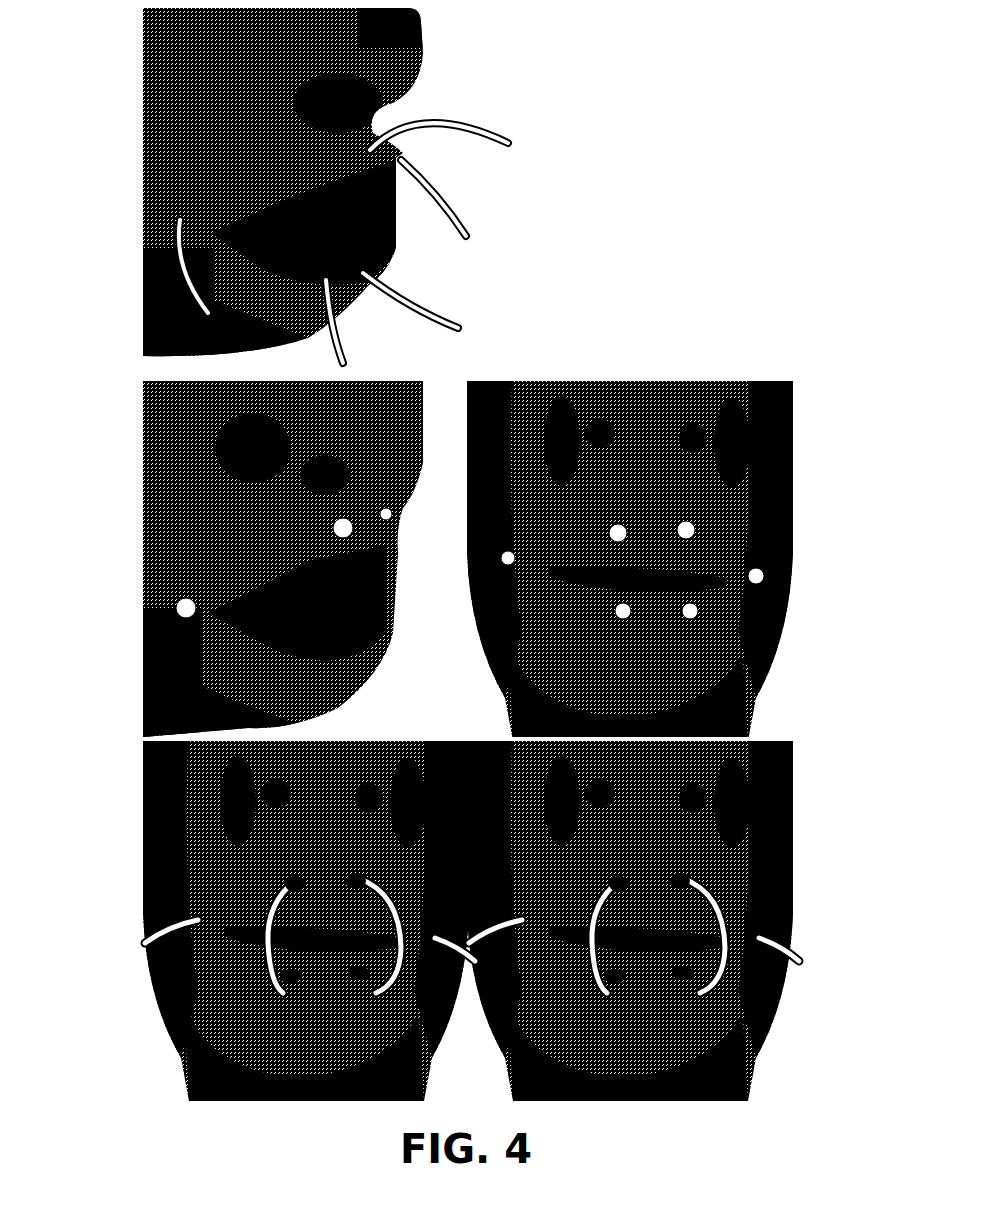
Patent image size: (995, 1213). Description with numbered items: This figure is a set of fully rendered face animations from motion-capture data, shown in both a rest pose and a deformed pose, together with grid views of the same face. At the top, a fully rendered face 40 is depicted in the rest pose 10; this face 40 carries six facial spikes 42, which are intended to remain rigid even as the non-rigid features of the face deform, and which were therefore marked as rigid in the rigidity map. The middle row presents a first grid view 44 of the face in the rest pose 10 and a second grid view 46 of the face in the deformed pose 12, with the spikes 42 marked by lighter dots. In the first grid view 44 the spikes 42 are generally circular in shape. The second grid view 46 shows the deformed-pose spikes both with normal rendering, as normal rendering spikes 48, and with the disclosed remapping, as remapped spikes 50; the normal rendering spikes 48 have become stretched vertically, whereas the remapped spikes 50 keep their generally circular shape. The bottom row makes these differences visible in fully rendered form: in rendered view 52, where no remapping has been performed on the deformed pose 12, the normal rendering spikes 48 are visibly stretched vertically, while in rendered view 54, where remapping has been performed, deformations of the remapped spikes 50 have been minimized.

The rest pose 10 is at (334, 374).
The deformed pose 12 is at (463, 726).
The fully rendered face 40 is at (512, 86).
The facial spikes 42 is at (430, 195).
The first grid view 44 is at (112, 423).
The second grid view 46 is at (808, 372).
The normal rendering spikes 48 is at (608, 515).
The remapped spikes 50 is at (600, 525).
The rendered view without remapping 52 is at (112, 769).
The rendered view with remapping 54 is at (795, 732).